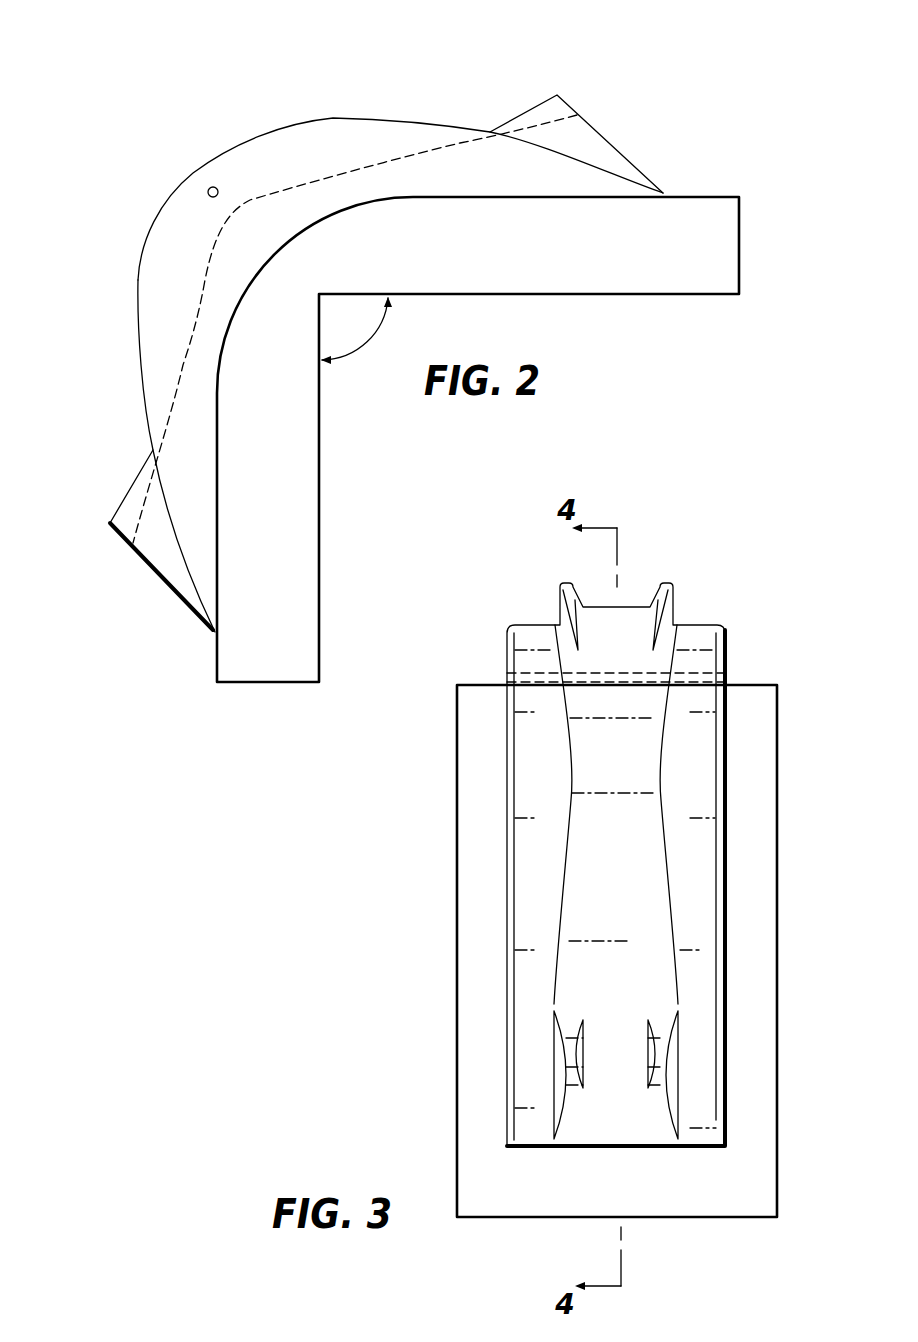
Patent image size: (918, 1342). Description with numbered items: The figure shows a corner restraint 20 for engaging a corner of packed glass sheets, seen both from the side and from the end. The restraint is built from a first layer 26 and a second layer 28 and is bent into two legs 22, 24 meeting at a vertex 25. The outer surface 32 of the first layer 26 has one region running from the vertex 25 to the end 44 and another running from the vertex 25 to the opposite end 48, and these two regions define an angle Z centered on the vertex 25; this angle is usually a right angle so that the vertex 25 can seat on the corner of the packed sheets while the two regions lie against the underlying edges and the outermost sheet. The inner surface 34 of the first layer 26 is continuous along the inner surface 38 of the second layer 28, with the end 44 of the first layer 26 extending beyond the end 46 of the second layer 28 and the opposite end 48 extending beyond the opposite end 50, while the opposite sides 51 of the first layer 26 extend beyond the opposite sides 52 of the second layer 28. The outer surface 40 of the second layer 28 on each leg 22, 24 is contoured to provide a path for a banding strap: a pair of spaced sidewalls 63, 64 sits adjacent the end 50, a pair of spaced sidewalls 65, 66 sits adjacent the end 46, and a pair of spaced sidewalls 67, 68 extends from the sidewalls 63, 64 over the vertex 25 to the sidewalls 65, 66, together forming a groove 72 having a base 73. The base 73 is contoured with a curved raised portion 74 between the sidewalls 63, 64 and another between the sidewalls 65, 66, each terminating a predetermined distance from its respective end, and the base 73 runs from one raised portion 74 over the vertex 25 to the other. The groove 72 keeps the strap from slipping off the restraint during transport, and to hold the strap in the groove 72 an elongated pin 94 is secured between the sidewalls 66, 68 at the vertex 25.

In FIG. 2, the corner restraint 20 is at (115, 105).
In FIG. 3, the corner restraint 20 is at (790, 718).
In FIG. 2, the leg 22 is at (508, 108).
In FIG. 2, the leg 24 is at (115, 428).
In FIG. 3, the leg 24 is at (781, 997).
In FIG. 2, the vertex 25 is at (321, 296).
In FIG. 2, the first layer 26 is at (572, 312).
In FIG. 3, the first layer 26 is at (785, 853).
In FIG. 2, the second layer 28 is at (297, 118).
In FIG. 3, the second layer 28 is at (735, 638).
In FIG. 2, the outer surface 32 is at (643, 296).
In FIG. 2, the inner surface 34 is at (697, 196).
In FIG. 3, the inner surface 34 is at (757, 765).
In FIG. 2, the inner surface 38 is at (423, 203).
In FIG. 2, the outer surface 40 is at (383, 118).
In FIG. 3, the outer surface 40 is at (709, 943).
In FIG. 2, the end 44 is at (740, 235).
In FIG. 2, the end 46 is at (648, 178).
In FIG. 2, the opposite end 48 is at (243, 683).
In FIG. 3, the opposite end 48 is at (506, 1220).
In FIG. 2, the opposite end 50 is at (208, 630).
In FIG. 3, the opposite end 50 is at (545, 1148).
In FIG. 2, the opposite sides 51 is at (551, 259).
In FIG. 3, the opposite sides 51 is at (778, 916).
In FIG. 2, the opposite sides 52 is at (253, 229).
In FIG. 3, the opposite sides 52 is at (503, 868).
In FIG. 2, the sidewall 63 is at (112, 522).
In FIG. 3, the sidewall 63 is at (662, 1070).
In FIG. 3, the sidewall 64 is at (569, 1078).
In FIG. 2, the sidewall 65 is at (558, 94).
In FIG. 3, the sidewall 65 is at (672, 600).
In FIG. 3, the sidewall 66 is at (560, 597).
In FIG. 2, the sidewall 67 is at (253, 132).
In FIG. 3, the sidewall 67 is at (707, 795).
In FIG. 3, the sidewall 68 is at (522, 905).
In FIG. 2, the groove 72 is at (250, 198).
In FIG. 3, the groove 72 is at (625, 597).
In FIG. 2, the base 73 is at (210, 252).
In FIG. 3, the base 73 is at (605, 866).
In FIG. 2, the curved raised portion 74 is at (575, 113).
In FIG. 3, the curved raised portion 74 is at (636, 617).
In FIG. 2, the pin 94 is at (208, 195).
In FIG. 3, the pin 94 is at (580, 672).
In FIG. 2, the angle Z is at (372, 343).